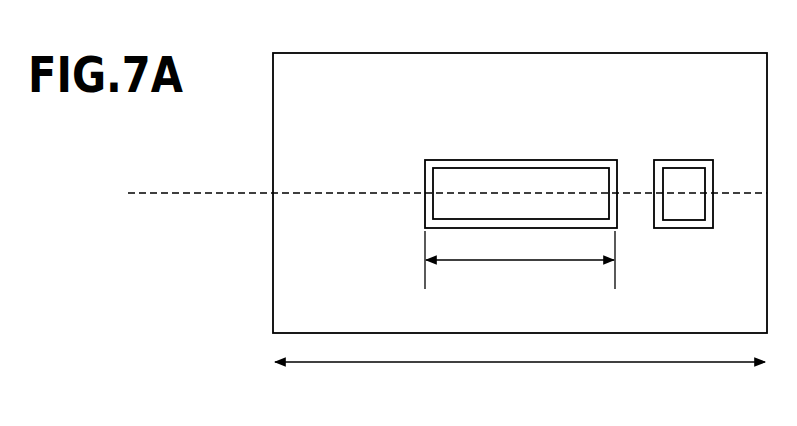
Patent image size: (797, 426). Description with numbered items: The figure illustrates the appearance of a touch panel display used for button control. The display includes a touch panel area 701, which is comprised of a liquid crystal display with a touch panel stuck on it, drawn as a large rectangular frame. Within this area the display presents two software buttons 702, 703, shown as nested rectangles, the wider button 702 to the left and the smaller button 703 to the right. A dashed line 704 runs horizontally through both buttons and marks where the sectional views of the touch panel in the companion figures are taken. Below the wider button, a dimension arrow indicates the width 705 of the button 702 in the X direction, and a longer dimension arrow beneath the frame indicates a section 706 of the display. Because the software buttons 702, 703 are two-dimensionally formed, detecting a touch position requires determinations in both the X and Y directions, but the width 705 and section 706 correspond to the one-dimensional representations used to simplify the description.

The touch panel area 701 is at (420, 53).
The software button 702 is at (520, 160).
The software button 703 is at (686, 160).
The line 704 is at (205, 190).
The width of the button 705 is at (520, 262).
The section 706 is at (520, 378).